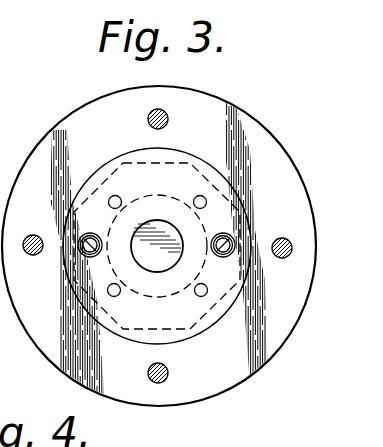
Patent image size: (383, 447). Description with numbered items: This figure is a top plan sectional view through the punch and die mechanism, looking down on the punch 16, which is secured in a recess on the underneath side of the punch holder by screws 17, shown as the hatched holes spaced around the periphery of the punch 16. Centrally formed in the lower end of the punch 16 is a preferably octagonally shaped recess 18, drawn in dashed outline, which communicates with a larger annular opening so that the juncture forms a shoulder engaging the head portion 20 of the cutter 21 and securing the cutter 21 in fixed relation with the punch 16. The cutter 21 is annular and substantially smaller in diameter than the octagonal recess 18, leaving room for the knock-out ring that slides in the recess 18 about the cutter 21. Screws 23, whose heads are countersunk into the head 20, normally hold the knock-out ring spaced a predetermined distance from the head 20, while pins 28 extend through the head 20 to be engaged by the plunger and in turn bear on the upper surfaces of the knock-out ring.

The punch 16 is at (259, 143).
The screws 17 is at (168, 120).
The octagonally shaped recess 18 is at (183, 333).
The head portion 20 is at (107, 168).
The cutter 21 is at (241, 281).
The screws 23 is at (230, 238).
The pins 28 is at (196, 197).